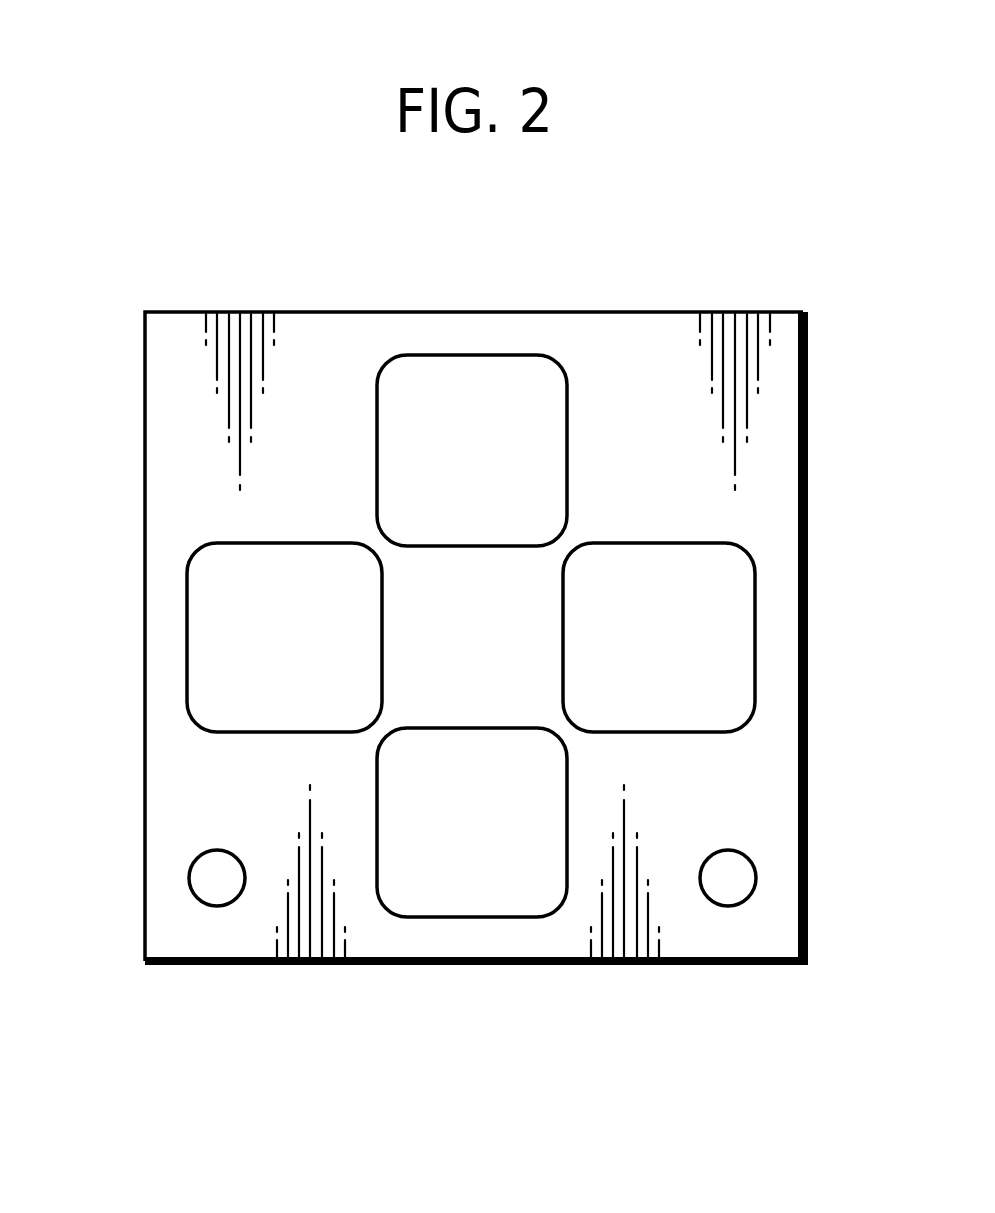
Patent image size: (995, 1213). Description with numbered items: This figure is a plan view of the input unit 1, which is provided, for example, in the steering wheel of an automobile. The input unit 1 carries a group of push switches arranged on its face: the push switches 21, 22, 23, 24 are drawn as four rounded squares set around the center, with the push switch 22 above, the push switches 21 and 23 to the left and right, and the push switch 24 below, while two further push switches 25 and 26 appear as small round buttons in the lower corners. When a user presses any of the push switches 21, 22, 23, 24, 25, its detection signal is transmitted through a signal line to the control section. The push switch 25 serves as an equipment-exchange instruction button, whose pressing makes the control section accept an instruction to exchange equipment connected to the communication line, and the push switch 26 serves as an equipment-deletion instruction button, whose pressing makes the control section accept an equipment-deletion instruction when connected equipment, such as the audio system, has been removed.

The input unit 1 is at (668, 312).
The push switch 21 is at (212, 636).
The push switch 22 is at (467, 378).
The push switch 23 is at (735, 638).
The push switch 24 is at (467, 897).
The push switch 25 is at (217, 897).
The push switch 26 is at (728, 897).